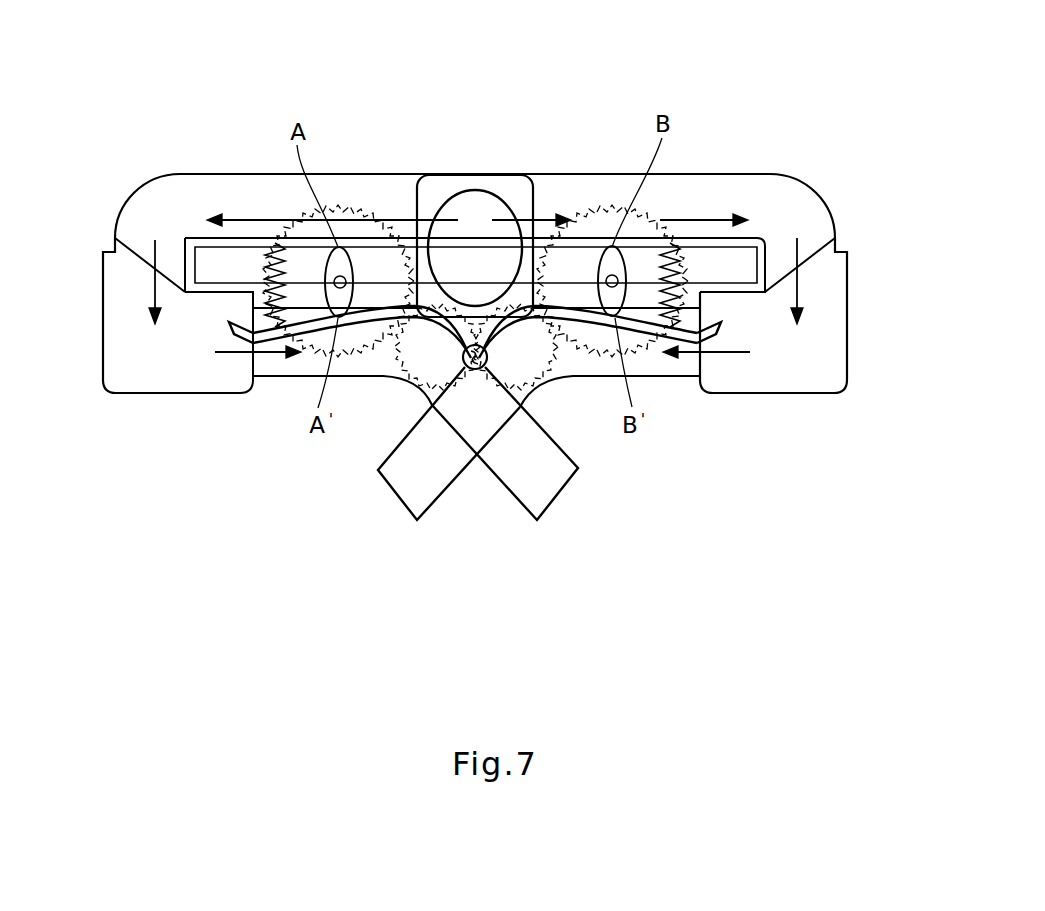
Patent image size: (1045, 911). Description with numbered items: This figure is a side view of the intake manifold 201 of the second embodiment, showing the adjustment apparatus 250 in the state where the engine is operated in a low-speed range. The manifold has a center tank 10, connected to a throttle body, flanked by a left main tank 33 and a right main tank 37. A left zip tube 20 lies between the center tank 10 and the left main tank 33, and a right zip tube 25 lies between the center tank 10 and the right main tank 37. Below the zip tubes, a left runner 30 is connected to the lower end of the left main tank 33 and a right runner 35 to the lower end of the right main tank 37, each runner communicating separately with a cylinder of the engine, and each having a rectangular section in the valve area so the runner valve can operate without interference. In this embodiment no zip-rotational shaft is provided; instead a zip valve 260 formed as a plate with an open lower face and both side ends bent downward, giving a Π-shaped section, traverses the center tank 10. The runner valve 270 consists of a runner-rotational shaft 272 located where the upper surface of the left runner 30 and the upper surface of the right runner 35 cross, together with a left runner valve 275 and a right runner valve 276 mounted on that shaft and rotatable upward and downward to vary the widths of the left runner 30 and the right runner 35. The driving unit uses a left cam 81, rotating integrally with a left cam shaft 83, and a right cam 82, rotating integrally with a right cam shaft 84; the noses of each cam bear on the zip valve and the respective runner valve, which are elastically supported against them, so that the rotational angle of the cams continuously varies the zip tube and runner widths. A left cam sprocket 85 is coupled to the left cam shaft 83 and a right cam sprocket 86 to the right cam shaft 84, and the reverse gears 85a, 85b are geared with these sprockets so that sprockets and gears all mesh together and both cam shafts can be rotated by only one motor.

The intake manifold 201 is at (644, 74).
The left zip tube 20 is at (193, 185).
The right zip tube 25 is at (758, 181).
The left main tank 33 is at (118, 332).
The right main tank 37 is at (838, 330).
The zip valve 260 is at (470, 240).
The center tank 10 is at (490, 185).
The adjustment apparatus 250 is at (551, 193).
The left cam sprocket 85 is at (357, 205).
The right cam sprocket 86 is at (598, 205).
The reverse gear 85a is at (406, 385).
The right idle gear 85b is at (548, 392).
The left cam 81 is at (345, 318).
The right cam 82 is at (606, 317).
The left cam shaft 83 is at (328, 296).
The right cam shaft 84 is at (624, 296).
The right runner 35 is at (404, 486).
The left runner 30 is at (556, 486).
The runner valve 270 is at (475, 466).
The runner-rotational shaft 272 is at (475, 371).
The left runner valve 275 is at (458, 378).
The right runner valve 276 is at (506, 378).